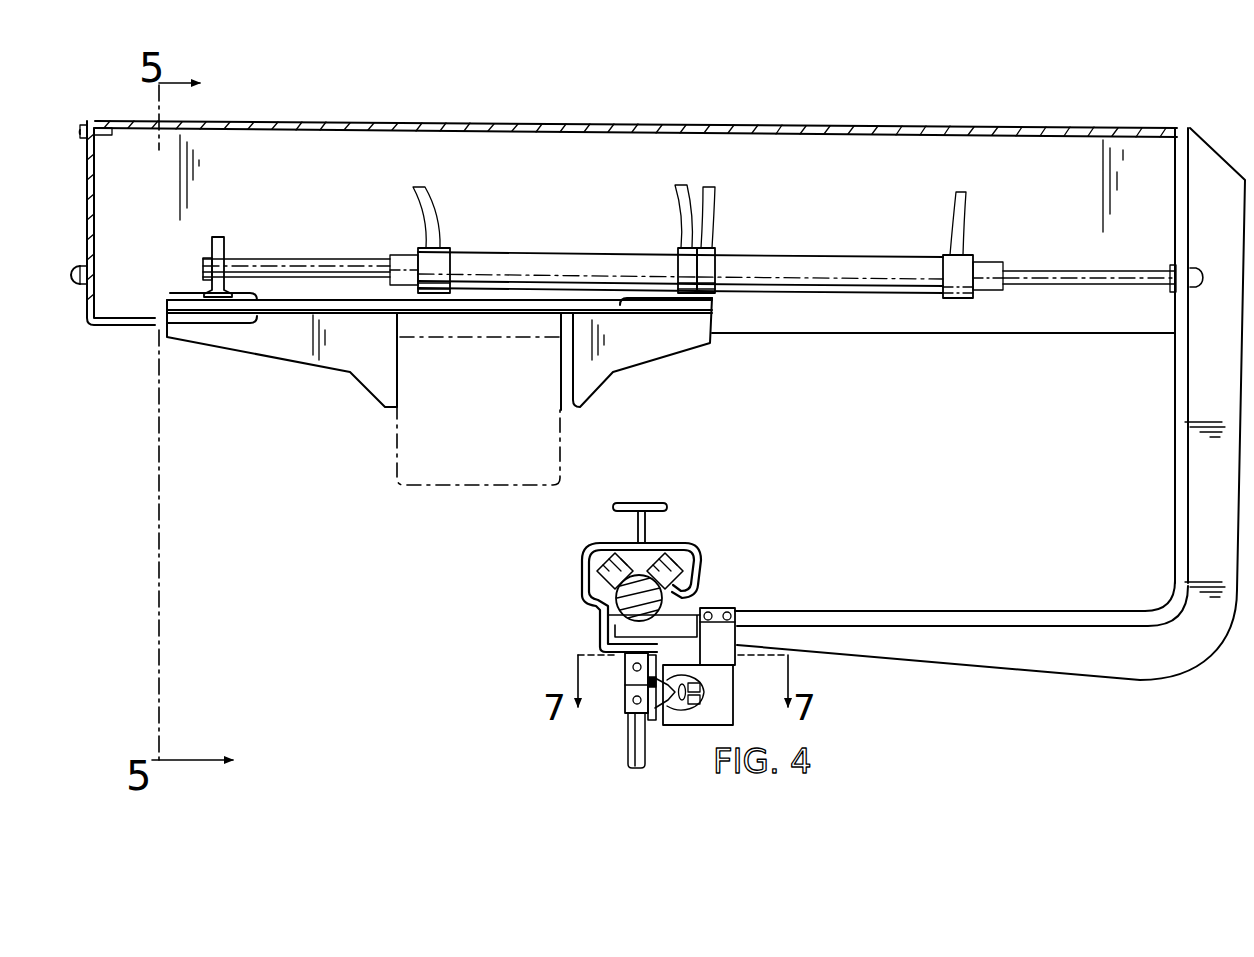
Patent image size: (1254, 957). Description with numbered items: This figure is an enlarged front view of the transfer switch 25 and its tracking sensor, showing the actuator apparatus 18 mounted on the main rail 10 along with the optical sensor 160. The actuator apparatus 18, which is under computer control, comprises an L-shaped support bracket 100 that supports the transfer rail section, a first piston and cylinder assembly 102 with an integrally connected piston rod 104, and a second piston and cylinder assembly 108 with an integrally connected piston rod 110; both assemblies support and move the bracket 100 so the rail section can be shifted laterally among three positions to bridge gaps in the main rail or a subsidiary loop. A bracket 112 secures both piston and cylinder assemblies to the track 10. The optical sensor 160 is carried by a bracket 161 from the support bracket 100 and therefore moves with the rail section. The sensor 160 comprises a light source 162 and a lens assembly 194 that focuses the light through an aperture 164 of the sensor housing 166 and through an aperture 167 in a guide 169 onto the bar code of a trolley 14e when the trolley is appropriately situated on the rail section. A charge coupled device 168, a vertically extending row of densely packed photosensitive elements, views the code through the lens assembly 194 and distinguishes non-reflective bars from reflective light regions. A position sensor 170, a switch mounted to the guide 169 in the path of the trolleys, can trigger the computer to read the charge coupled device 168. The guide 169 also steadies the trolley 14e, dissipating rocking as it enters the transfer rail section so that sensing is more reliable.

The main rail 10 is at (562, 417).
The actuator apparatus 18 is at (789, 106).
The switch 25 is at (936, 106).
The L-shaped support bracket 100 is at (1167, 533).
The first piston and cylinder assembly 102 is at (540, 258).
The piston rod 104 is at (288, 268).
The second piston and cylinder assembly 108 is at (813, 265).
The piston rod 110 is at (1042, 272).
The bracket 112 is at (224, 248).
The trolley 14e is at (596, 592).
The optical sensor 160 is at (741, 716).
The bracket 161 is at (726, 640).
The light source 162 is at (703, 683).
The aperture 164 is at (647, 698).
The sensor housing 166 is at (690, 725).
The aperture 167 is at (648, 690).
The charge coupled device 168 is at (701, 698).
The guide 169 is at (657, 714).
The position sensor 170 is at (653, 672).
The lens assembly 194 is at (674, 704).